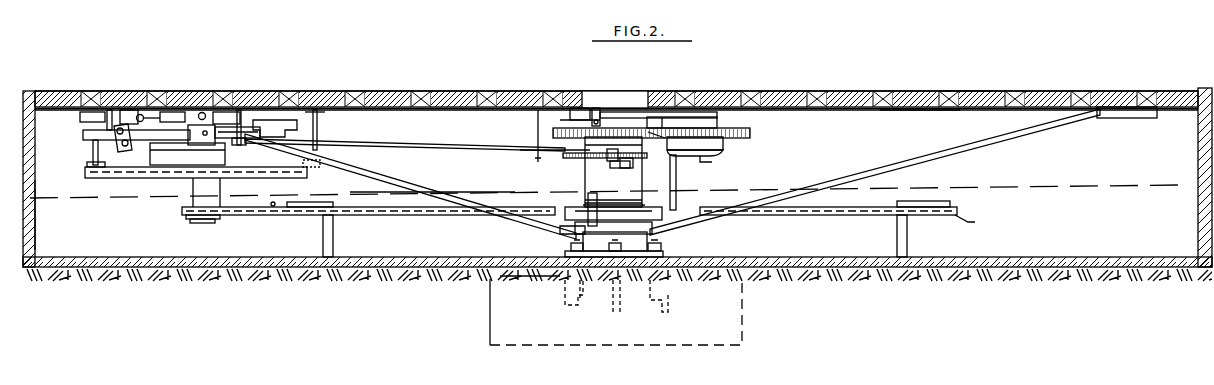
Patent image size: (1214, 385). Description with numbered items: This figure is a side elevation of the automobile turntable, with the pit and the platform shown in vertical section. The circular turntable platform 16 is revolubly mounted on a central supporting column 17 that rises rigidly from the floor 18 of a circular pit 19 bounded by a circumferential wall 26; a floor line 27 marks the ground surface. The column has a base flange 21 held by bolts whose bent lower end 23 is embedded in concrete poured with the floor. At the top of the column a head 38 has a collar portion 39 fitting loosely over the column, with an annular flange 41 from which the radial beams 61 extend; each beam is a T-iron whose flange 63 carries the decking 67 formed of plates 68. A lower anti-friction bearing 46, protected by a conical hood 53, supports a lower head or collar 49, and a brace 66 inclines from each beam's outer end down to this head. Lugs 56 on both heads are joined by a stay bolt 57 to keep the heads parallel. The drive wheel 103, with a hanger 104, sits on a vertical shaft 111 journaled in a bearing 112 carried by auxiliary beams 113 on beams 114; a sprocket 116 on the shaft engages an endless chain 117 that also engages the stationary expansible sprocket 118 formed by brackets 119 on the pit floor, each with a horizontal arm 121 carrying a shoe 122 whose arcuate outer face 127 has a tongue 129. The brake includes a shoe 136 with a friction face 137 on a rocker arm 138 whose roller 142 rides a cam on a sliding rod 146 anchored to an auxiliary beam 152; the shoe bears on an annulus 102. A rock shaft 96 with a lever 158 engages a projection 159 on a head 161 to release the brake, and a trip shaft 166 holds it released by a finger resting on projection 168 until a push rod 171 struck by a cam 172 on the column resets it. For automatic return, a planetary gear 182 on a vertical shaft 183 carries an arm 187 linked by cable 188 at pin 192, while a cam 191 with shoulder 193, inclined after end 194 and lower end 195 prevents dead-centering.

The turntable platform 16 is at (414, 75).
The central supporting column 17 is at (671, 177).
The floor 18 is at (852, 279).
The pit 19 is at (31, 186).
The base flange 21 is at (666, 253).
The lower end of bolt 23 is at (538, 313).
The circumferential wall 26 is at (31, 252).
The floor line 27 is at (518, 279).
The head 38 is at (602, 92).
The collar portion 39 is at (585, 100).
The annular flange 41 is at (569, 113).
The anti-friction bearing 46 is at (535, 204).
The head or collar 49 is at (580, 231).
The conical hood 53 is at (665, 208).
The lugs 56 is at (601, 108).
The stay bolt 57 is at (590, 210).
The beams 61 is at (925, 111).
The flange 63 is at (446, 110).
The brace 66 is at (1018, 144).
The decking 67 is at (968, 86).
The plates 68 is at (441, 93).
The rock shaft 96 is at (128, 152).
The annulus 102 is at (268, 120).
The wheel 103 is at (318, 132).
The hanger 104 is at (300, 125).
The vertical shaft 111 is at (198, 221).
The bearing 112 is at (212, 199).
The auxiliary beams 113 is at (166, 180).
The beams 114 is at (92, 160).
The sprocket 116 is at (213, 222).
The endless chain 117 is at (358, 216).
The stationary expansible sprocket 118 is at (294, 228).
The brackets 119 is at (330, 262).
The horizontal arm 121 is at (313, 205).
The shoe 122 is at (271, 214).
The arcuate outer face 127 is at (955, 206).
The tongue 129 is at (973, 222).
The shoe 136 is at (173, 112).
The face 137 is at (231, 121).
The rocker arm 138 is at (211, 112).
The roller 142 is at (206, 116).
The rod 146 is at (172, 141).
The auxiliary beam 152 is at (82, 120).
The lever 158 is at (122, 151).
The projection 159 is at (150, 125).
The head 161 is at (112, 140).
The shaft 166 is at (143, 114).
The projection 168 is at (136, 118).
The push rod 171 is at (484, 153).
The cam 172 is at (575, 159).
The planetary gear 182 is at (735, 130).
The vertical shaft 183 is at (718, 124).
The arm 187 is at (652, 128).
The cable 188 is at (613, 160).
The cam 191 is at (723, 145).
The pin 192 is at (630, 169).
The shoulder 193 is at (663, 140).
The after end 194 is at (726, 154).
The lower end 195 is at (713, 162).